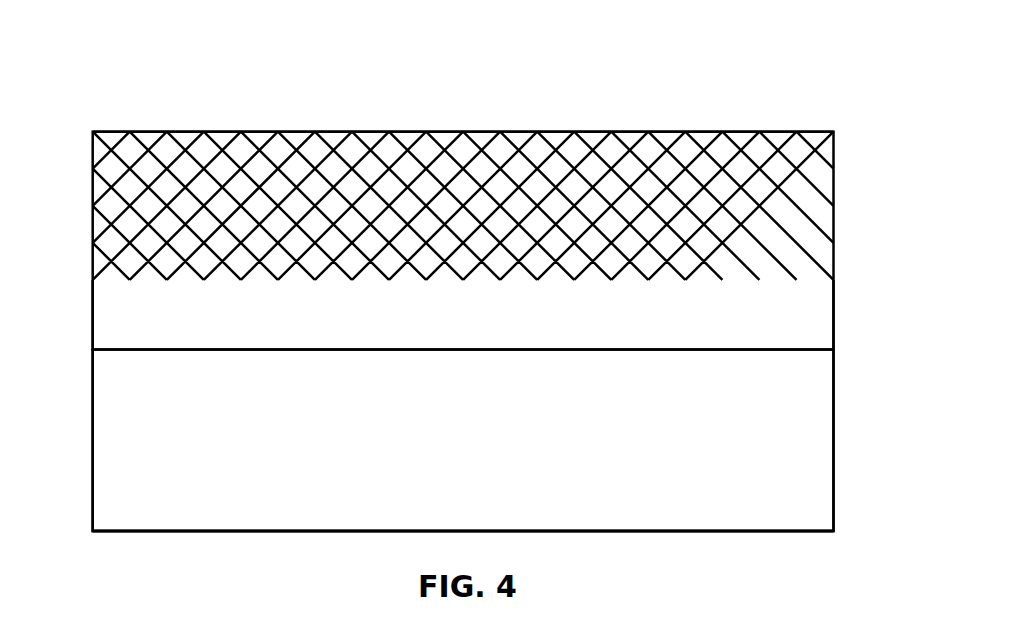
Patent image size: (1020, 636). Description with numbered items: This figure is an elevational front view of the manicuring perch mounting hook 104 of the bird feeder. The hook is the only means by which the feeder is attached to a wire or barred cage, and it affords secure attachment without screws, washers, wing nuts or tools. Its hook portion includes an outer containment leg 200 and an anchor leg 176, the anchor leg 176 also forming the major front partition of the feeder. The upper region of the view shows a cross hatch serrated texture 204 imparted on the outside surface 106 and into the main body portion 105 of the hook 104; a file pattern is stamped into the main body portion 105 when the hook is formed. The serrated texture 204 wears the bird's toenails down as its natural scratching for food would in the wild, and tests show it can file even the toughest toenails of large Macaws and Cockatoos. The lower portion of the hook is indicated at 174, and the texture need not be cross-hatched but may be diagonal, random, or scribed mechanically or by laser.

The manicuring perch mounting hook 104 is at (123, 82).
The outside surface 106 is at (259, 123).
The cross hatch serrated texture 204 is at (425, 132).
The outer containment leg 200 is at (145, 310).
The anchor leg 176 is at (830, 413).
The bottom surface 174 is at (702, 533).
The main body portion 105 is at (246, 543).